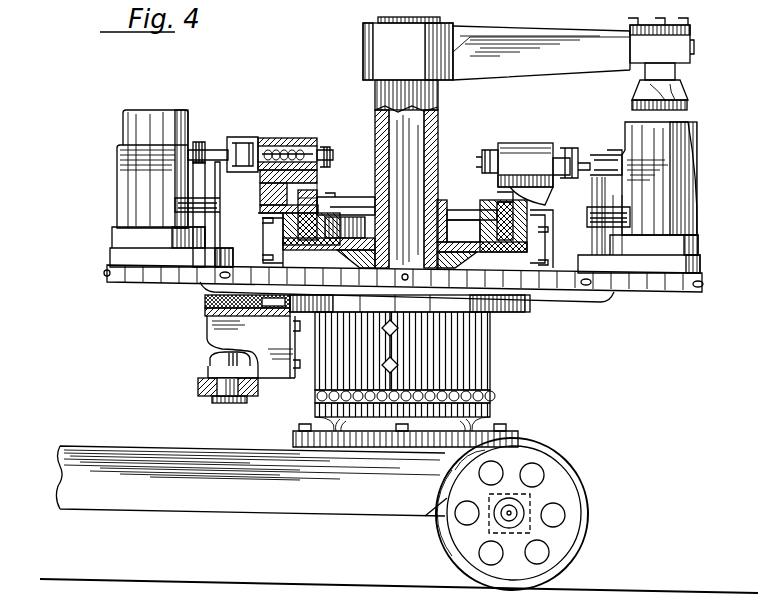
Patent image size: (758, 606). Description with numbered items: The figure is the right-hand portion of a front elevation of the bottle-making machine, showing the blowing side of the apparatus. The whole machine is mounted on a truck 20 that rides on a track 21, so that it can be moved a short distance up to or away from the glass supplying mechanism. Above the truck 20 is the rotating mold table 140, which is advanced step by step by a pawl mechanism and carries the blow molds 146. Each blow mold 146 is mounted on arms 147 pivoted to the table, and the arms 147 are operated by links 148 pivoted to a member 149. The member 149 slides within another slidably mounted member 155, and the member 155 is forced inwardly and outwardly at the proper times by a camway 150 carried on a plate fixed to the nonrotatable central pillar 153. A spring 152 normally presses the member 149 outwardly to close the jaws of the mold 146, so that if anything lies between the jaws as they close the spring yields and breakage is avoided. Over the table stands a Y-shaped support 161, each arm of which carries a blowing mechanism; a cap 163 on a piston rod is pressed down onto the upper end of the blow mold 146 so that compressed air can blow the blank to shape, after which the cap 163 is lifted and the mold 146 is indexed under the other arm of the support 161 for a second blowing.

The truck 20 is at (322, 513).
The track 21 is at (390, 592).
The mold table 140 is at (241, 268).
The blow mold 146 is at (183, 102).
The arm 147 is at (208, 141).
The link 148 is at (230, 140).
The member 149 is at (262, 138).
The camway 150 is at (300, 252).
The spring 152 is at (300, 142).
The pillar 153 is at (438, 139).
The slidably mounted member 155 is at (260, 198).
The Y-shaped support 161 is at (603, 72).
The cap 163 is at (690, 105).